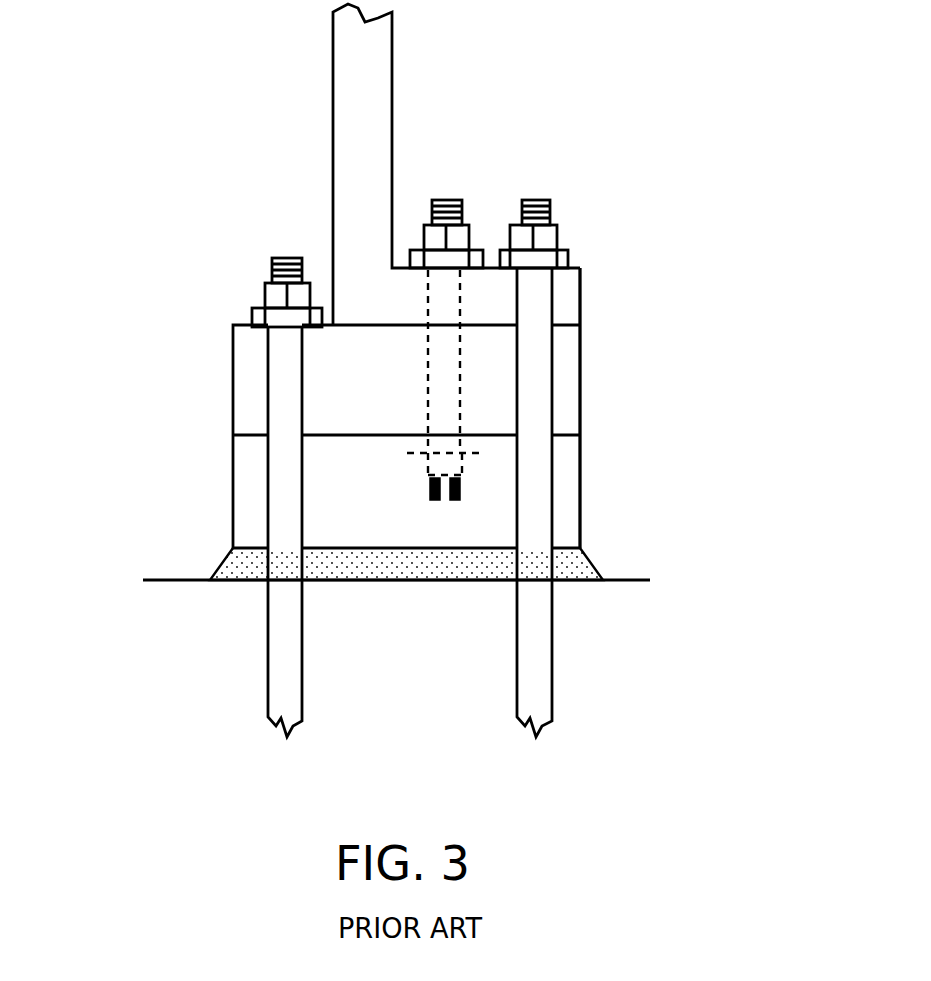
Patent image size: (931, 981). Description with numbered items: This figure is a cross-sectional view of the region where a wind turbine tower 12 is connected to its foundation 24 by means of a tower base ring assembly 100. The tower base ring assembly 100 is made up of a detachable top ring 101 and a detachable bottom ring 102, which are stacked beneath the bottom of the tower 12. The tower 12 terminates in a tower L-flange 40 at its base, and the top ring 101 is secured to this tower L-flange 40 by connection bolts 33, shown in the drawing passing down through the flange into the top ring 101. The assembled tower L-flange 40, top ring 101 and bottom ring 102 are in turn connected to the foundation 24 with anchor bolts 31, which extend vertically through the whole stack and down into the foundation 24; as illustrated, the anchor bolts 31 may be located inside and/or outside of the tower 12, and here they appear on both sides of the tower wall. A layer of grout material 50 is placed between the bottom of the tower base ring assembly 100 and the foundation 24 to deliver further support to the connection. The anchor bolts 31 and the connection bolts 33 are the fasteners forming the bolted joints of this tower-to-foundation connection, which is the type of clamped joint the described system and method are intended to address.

The tower 12 is at (357, 108).
The foundation 24 is at (190, 582).
The anchor bolts 31 is at (288, 477).
The connection bolts 33 is at (443, 355).
The tower L-flange 40 is at (567, 303).
The grout material 50 is at (227, 563).
The tower base ring assembly 100 is at (592, 428).
The top ring 101 is at (248, 358).
The bottom ring 102 is at (247, 492).